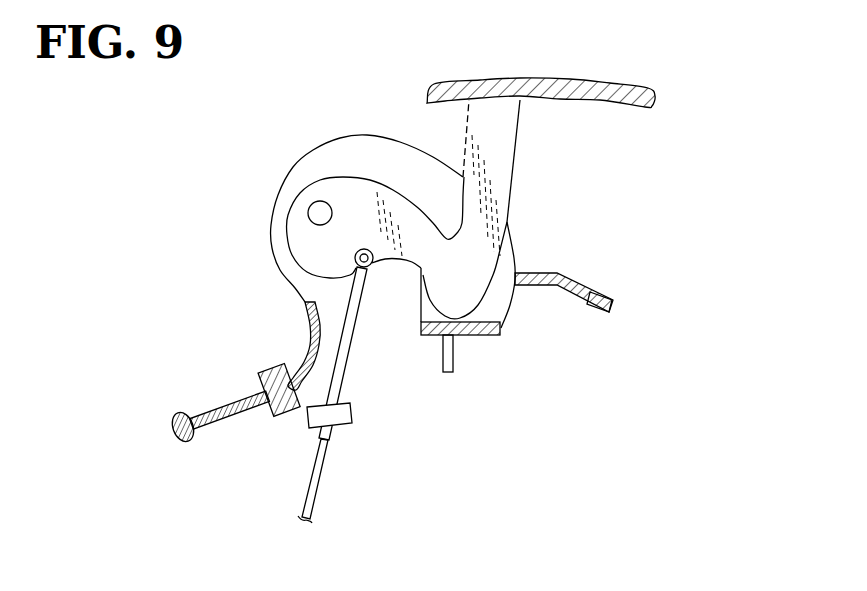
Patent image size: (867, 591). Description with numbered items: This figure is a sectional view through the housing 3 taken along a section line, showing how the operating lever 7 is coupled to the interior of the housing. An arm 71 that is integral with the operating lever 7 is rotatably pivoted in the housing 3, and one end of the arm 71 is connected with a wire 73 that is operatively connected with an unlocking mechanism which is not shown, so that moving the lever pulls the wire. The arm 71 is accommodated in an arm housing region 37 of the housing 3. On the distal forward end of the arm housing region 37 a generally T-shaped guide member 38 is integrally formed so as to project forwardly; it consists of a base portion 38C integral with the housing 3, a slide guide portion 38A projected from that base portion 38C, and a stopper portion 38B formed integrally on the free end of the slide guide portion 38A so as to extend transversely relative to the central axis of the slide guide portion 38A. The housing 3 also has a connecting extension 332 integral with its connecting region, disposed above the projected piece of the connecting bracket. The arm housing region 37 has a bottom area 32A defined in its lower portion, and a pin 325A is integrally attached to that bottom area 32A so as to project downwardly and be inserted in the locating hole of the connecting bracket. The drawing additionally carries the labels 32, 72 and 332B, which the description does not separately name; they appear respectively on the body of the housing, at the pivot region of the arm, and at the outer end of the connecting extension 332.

The housing 3 is at (292, 137).
The operating lever 7 is at (536, 87).
The body member 32 is at (393, 167).
The bottom area 32A is at (487, 333).
The pin 325A is at (453, 373).
The connecting extension 332 is at (557, 273).
The arm tip 332B is at (600, 294).
The arm housing region 37 is at (328, 322).
The guide member 38 is at (179, 434).
The slide guide portion 38A is at (226, 423).
The stopper portion 38B is at (170, 437).
The base portion 38C is at (258, 368).
The arm 71 is at (355, 193).
The pivot hole 72 is at (317, 215).
The wire 73 is at (343, 363).